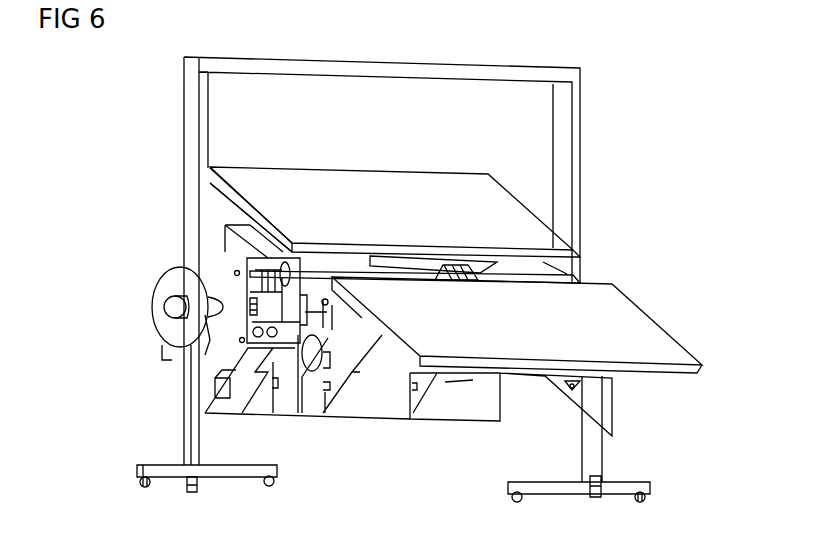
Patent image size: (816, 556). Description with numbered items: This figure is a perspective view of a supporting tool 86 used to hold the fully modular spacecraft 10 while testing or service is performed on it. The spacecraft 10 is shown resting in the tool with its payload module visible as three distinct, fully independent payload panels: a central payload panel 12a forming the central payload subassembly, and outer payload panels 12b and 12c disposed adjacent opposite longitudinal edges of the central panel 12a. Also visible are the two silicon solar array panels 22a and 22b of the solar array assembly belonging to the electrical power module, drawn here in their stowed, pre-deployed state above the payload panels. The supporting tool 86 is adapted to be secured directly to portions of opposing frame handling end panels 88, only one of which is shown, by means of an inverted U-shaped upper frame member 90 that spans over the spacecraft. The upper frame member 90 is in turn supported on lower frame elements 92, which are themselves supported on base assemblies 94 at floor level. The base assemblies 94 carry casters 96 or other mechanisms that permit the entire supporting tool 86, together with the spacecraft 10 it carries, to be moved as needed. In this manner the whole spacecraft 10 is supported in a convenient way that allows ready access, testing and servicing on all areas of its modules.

The spacecraft 10 is at (292, 142).
The payload panel 12a is at (482, 407).
The payload panel 12b is at (360, 358).
The payload panel 12c is at (240, 226).
The solar array panel 22a is at (650, 335).
The solar array panel 22b is at (402, 190).
The supporting tool 86 is at (165, 130).
The frame handling end panel 88 is at (218, 263).
The upper frame member 90 is at (443, 62).
The lower frame element 92 is at (222, 407).
The base assembly 94 is at (290, 467).
The caster 96 is at (268, 486).